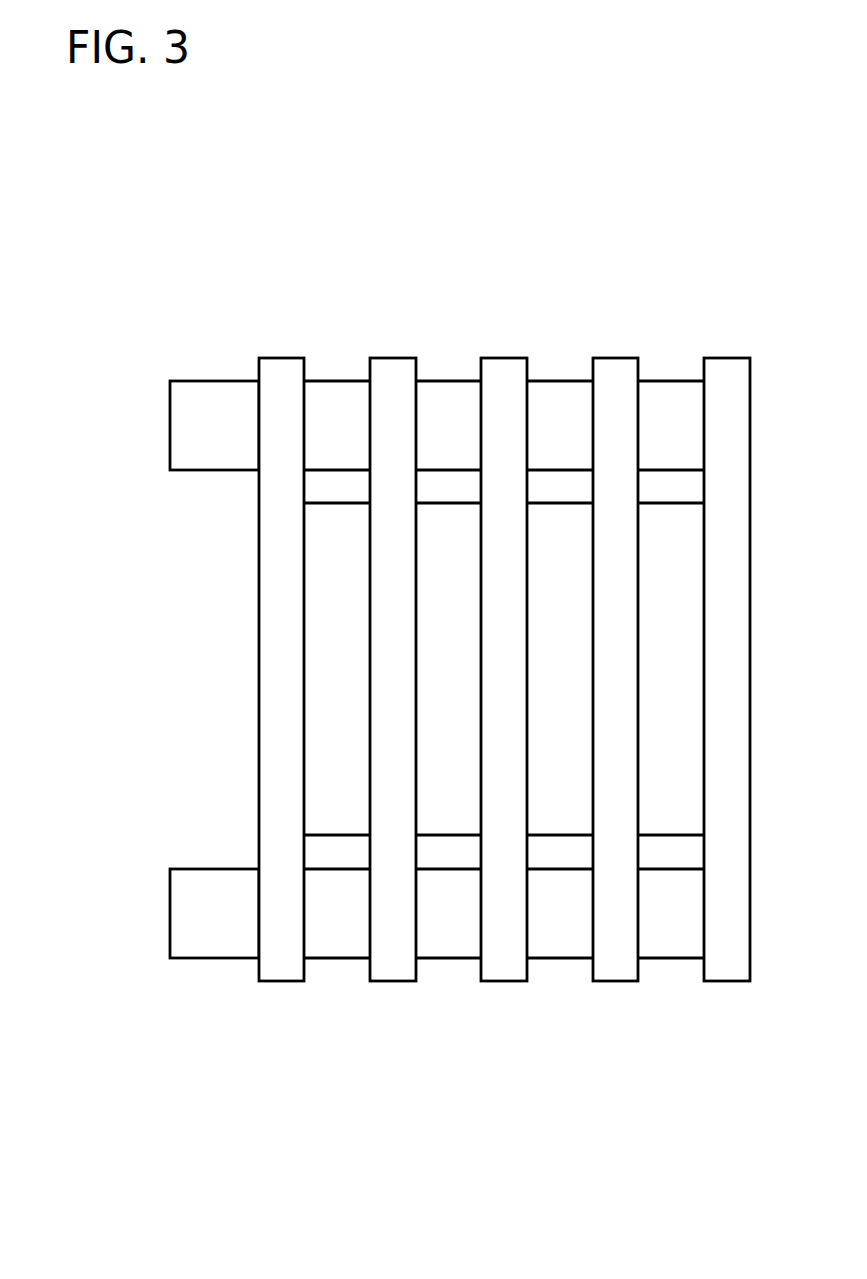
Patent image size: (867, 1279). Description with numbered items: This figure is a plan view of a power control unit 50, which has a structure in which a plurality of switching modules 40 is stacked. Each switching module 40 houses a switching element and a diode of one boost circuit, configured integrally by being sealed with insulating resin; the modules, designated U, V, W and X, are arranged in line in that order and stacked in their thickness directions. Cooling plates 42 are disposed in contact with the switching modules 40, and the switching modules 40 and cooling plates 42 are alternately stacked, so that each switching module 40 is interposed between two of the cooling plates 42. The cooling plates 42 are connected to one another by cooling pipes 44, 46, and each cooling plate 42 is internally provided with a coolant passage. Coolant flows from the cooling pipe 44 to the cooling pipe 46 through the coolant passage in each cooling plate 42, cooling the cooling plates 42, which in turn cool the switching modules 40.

The power control unit 50 is at (186, 251).
The switching module 40 is at (676, 535).
The cooling plate 42 is at (727, 968).
The cooling pipe 44 is at (215, 392).
The cooling pipe 46 is at (215, 947).